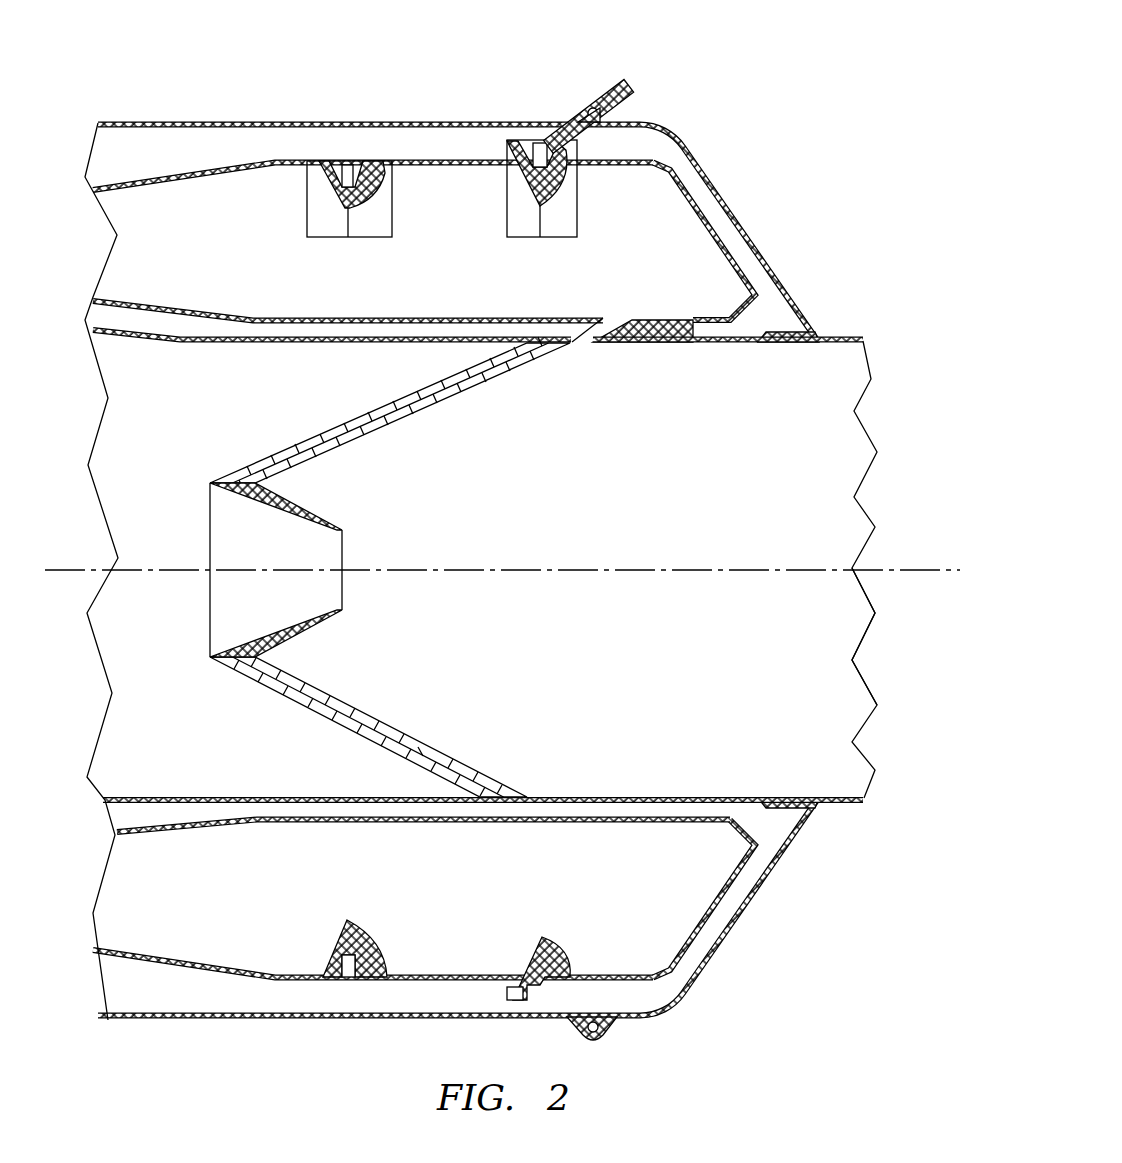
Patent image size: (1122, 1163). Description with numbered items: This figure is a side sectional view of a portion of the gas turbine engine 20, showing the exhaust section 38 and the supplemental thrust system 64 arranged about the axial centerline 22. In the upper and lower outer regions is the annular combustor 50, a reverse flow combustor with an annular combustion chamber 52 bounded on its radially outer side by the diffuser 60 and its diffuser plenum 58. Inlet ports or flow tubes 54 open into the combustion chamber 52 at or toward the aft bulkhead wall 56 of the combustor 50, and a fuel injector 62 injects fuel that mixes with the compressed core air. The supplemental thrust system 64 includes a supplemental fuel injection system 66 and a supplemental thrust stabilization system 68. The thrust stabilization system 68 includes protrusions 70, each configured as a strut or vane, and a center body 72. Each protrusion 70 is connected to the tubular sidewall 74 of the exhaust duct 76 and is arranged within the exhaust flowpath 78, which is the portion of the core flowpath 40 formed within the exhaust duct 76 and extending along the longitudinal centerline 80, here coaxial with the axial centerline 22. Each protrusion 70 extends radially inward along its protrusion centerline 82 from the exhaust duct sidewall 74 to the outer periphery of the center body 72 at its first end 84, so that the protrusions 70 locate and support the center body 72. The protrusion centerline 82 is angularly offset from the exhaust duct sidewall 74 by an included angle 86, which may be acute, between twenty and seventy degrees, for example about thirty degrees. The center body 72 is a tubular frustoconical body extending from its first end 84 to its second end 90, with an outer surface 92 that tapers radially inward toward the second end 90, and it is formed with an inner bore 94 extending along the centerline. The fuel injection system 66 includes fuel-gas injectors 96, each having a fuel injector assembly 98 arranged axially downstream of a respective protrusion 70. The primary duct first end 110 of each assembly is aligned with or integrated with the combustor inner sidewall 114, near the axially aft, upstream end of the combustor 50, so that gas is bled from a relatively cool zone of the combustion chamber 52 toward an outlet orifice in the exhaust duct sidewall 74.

The gas turbine engine 20 is at (496, 513).
The axial centerline 22 is at (502, 520).
The exhaust section 38 is at (890, 525).
The core flowpath 40 is at (876, 636).
The combustor 50 is at (470, 189).
The combustion chamber 52 is at (670, 223).
The inlet ports/flow tubes 54 is at (392, 197).
The aft bulkhead wall 56 is at (713, 233).
The diffuser plenum 58 is at (763, 310).
The diffuser 60 is at (465, 122).
The fuel injector 62 is at (551, 132).
The supplemental thrust system 64 is at (390, 337).
The supplemental fuel injection system 66 is at (645, 312).
The supplemental thrust stabilization system 68 is at (163, 693).
The protrusion 70 is at (390, 567).
The center body 72 is at (297, 500).
The exhaust duct sidewall 74 is at (723, 343).
The exhaust duct 76 is at (838, 333).
The exhaust flowpath 78 is at (807, 699).
The longitudinal centerline 80 is at (910, 570).
The protrusion centerline 82 is at (330, 417).
The first end 84 is at (208, 483).
The included angle 86 is at (390, 748).
The second end 90 is at (342, 530).
The outer surface 92 is at (290, 640).
The inner bore 94 is at (278, 558).
The fuel-gas injector 96 is at (332, 380).
The fuel injector assembly 98 is at (570, 350).
The primary duct first end 110 is at (607, 323).
The combustor inner sidewall 114 is at (583, 317).